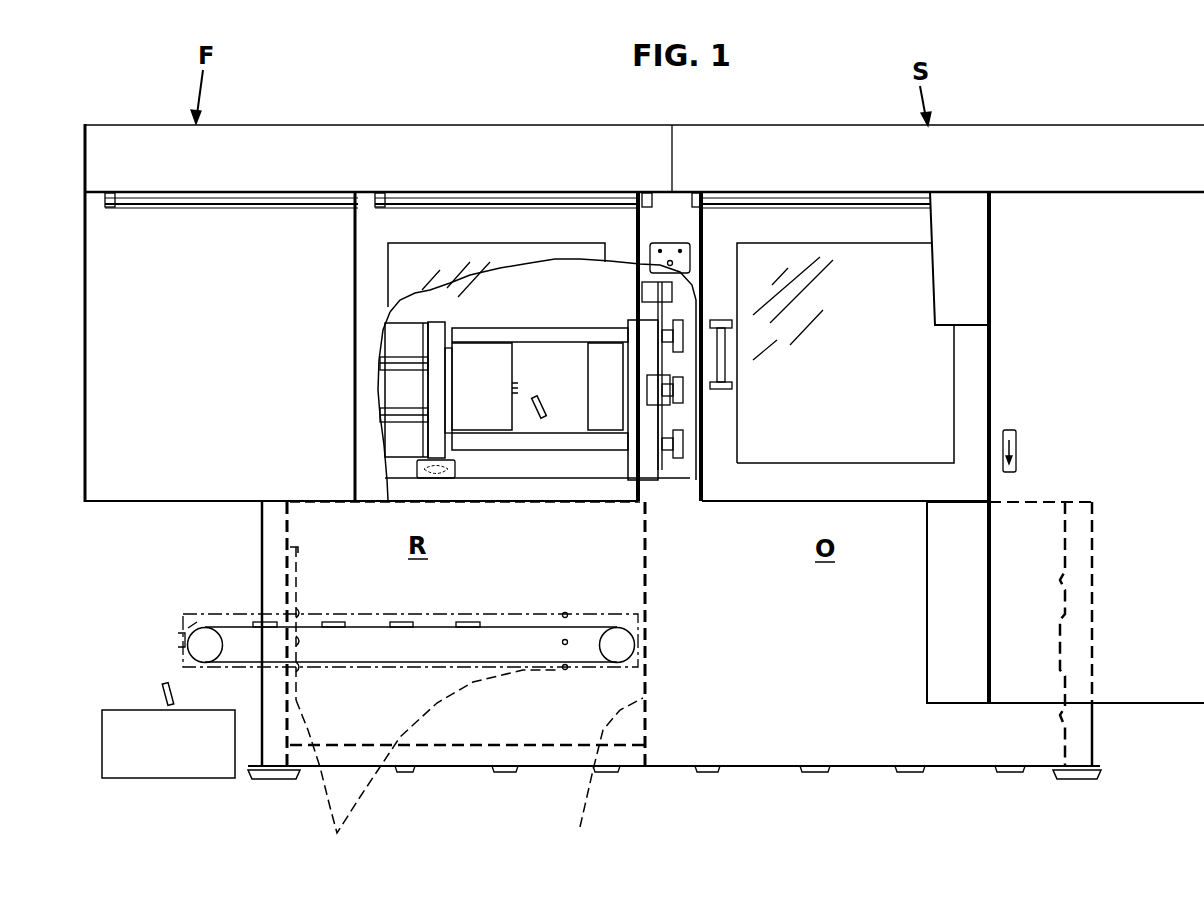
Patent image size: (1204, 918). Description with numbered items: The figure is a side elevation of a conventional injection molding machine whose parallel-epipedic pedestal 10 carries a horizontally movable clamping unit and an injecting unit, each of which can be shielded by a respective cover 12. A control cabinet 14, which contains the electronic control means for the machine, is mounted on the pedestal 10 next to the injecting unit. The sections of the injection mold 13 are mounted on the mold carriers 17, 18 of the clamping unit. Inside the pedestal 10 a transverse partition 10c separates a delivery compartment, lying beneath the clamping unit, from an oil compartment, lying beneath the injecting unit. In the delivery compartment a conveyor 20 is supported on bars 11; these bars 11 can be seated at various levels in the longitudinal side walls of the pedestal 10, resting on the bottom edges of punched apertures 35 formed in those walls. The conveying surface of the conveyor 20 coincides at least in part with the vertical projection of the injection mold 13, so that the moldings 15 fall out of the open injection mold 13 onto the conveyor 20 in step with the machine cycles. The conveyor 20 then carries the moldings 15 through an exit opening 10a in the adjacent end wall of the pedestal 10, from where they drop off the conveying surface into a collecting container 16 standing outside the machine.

The pedestal 10 is at (760, 769).
The exit opening 10a is at (285, 575).
The transverse partition 10c is at (605, 778).
The bars 11 is at (425, 707).
The covers 12 is at (758, 262).
The injection mold 13 is at (600, 365).
The control cabinet 14 is at (1108, 270).
The moldings 15 is at (545, 400).
The collecting container 16 is at (178, 760).
The mold carrier 17 is at (643, 460).
The mold carrier 18 is at (438, 340).
The conveyor 20 is at (230, 614).
The punched apertures 35 is at (562, 666).